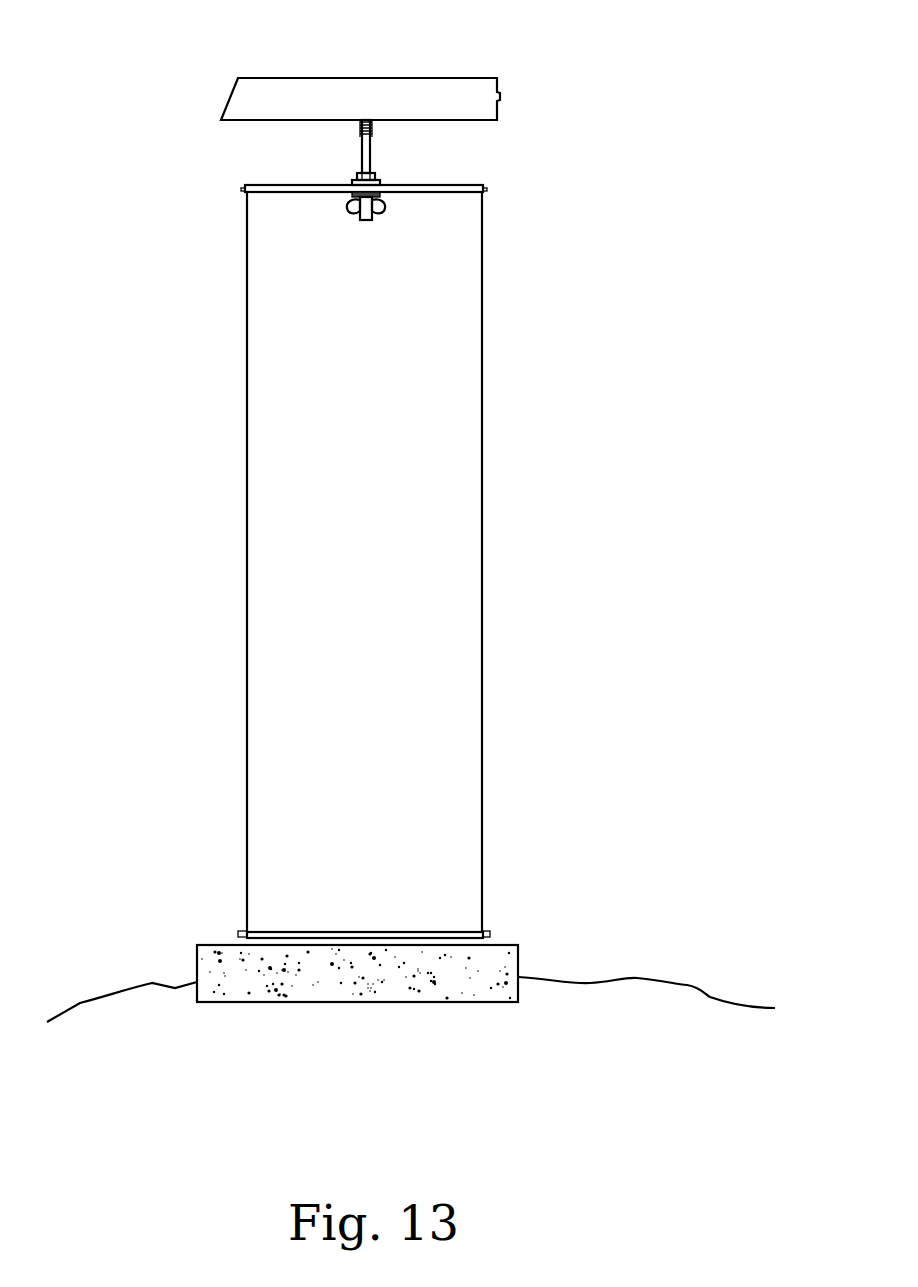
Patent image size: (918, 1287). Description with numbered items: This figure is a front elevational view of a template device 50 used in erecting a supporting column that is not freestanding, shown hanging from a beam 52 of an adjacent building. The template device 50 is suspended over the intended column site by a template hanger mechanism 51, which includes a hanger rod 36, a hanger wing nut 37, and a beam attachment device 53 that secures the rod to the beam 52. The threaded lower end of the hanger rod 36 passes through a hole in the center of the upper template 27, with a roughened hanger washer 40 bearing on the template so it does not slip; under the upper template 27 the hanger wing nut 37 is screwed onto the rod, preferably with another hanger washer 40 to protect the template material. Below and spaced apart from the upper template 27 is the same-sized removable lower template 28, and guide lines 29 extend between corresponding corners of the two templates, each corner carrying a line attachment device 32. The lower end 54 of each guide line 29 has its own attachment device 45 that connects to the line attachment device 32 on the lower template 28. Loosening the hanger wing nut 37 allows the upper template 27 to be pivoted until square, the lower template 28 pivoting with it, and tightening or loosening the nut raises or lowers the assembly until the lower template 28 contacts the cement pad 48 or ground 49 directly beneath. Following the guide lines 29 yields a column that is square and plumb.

The upper template 27 is at (323, 193).
The removable lower template 28 is at (367, 930).
The guide lines 29 is at (247, 568).
The line attachment device 32 is at (243, 189).
The hanger rod 36 is at (372, 166).
The hanger wing nut 37 is at (382, 203).
The hanger washer 40 is at (357, 182).
The attachment device 45 is at (240, 935).
The cement pad 48 is at (520, 965).
The ground 49 is at (604, 1030).
The template device 50 is at (690, 250).
The template hanger mechanism 51 is at (528, 153).
The beam 52 is at (472, 82).
The beam attachment device 53 is at (367, 118).
The lower end 54 is at (250, 930).